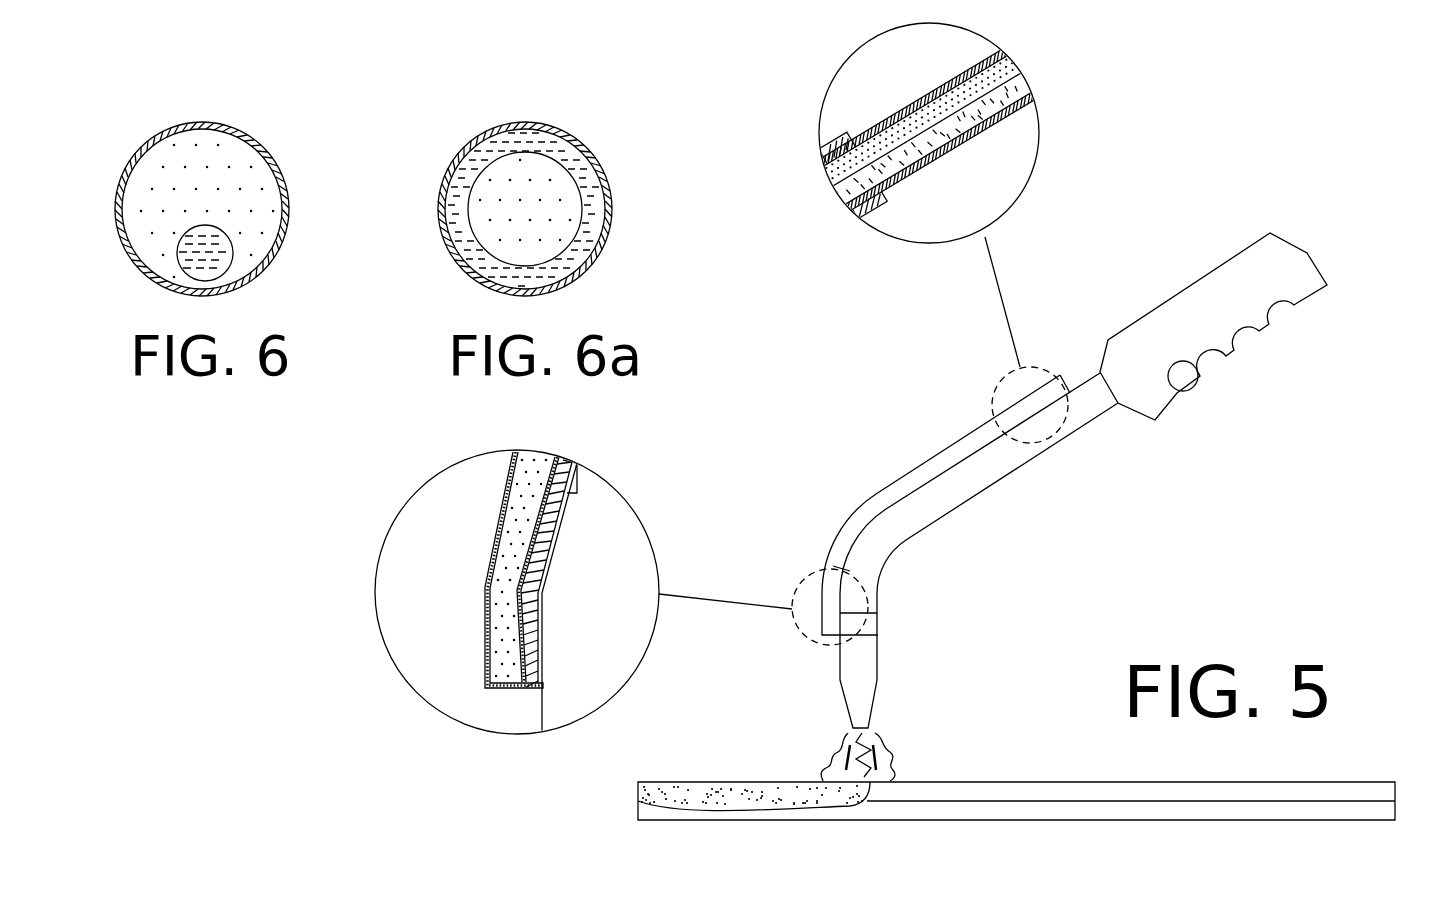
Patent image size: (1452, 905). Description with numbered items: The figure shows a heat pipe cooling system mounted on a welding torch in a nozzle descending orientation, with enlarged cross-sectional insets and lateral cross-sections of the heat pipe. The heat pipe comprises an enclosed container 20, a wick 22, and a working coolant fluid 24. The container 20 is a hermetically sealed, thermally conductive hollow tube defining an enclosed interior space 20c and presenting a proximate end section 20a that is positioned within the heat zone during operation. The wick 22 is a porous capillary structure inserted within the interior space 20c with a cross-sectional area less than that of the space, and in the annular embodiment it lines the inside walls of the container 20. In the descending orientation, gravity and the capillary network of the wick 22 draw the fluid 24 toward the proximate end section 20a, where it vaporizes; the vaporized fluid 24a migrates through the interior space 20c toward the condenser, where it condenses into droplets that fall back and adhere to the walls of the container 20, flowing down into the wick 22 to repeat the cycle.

In FIG. 6, the enclosed container 20 is at (134, 149).
In FIG. 5, the proximate end section 20a is at (523, 688).
In FIG. 6, the enclosed interior space 20c is at (207, 171).
In FIG. 6A, the enclosed interior space 20c is at (542, 167).
In FIG. 6, the wick 22 is at (212, 250).
In FIG. 6A, the wick 22 is at (597, 167).
In FIG. 5, the working coolant fluid 24 is at (960, 98).
In FIG. 6A, the vaporized fluid 24a is at (505, 202).
In FIG. 5, the vaporized fluid 24a is at (497, 612).